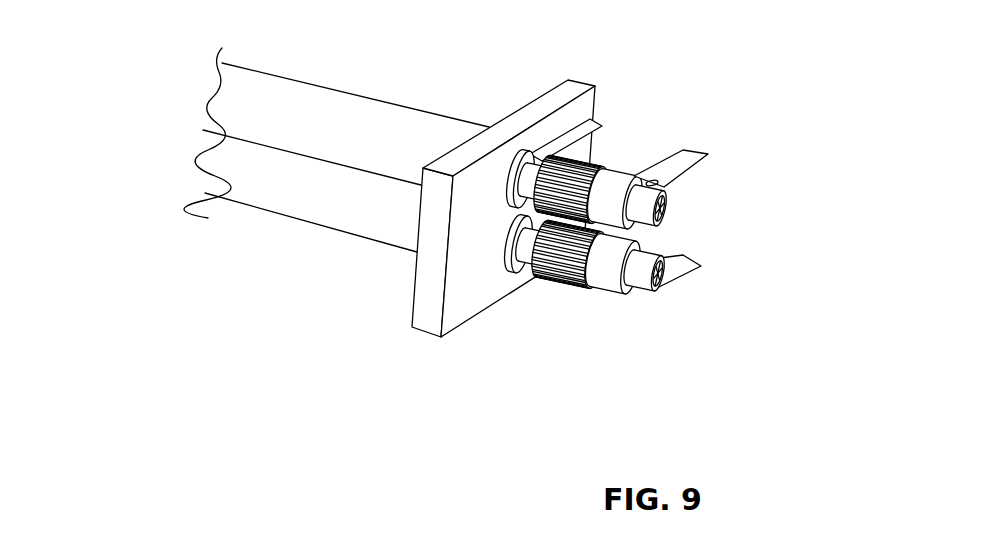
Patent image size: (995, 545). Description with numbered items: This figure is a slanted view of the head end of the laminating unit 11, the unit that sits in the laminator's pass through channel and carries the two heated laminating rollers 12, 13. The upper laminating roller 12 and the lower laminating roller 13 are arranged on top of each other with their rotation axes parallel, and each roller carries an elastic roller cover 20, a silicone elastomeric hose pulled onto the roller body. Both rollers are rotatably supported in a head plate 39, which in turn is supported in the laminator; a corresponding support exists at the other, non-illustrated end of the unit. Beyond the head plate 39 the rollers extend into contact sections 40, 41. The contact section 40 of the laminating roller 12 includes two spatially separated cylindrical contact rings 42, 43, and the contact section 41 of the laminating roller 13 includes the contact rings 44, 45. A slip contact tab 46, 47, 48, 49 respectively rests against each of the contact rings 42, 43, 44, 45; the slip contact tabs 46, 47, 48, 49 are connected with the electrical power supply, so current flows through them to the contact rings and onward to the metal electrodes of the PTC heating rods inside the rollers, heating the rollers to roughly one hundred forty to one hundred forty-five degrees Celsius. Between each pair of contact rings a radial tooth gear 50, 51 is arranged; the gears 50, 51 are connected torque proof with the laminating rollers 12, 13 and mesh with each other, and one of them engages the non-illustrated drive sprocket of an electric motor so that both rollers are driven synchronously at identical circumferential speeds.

The laminating unit 11 is at (632, 78).
The upper laminating roller 12 is at (418, 102).
The lower laminating roller 13 is at (292, 222).
The roller cover 20 is at (290, 100).
The head plate 39 is at (537, 105).
The contact section 40 is at (657, 146).
The contact section 41 is at (585, 320).
The contact ring 42 is at (527, 175).
The contact ring 43 is at (649, 203).
The contact ring 44 is at (524, 259).
The contact ring 45 is at (637, 300).
The slip contact tab 46 is at (593, 133).
The slip contact tab 47 is at (694, 157).
The slip contact tab 48 is at (533, 271).
The slip contact tab 49 is at (687, 269).
The radial tooth gear 50 is at (590, 166).
The radial tooth gear 51 is at (562, 273).